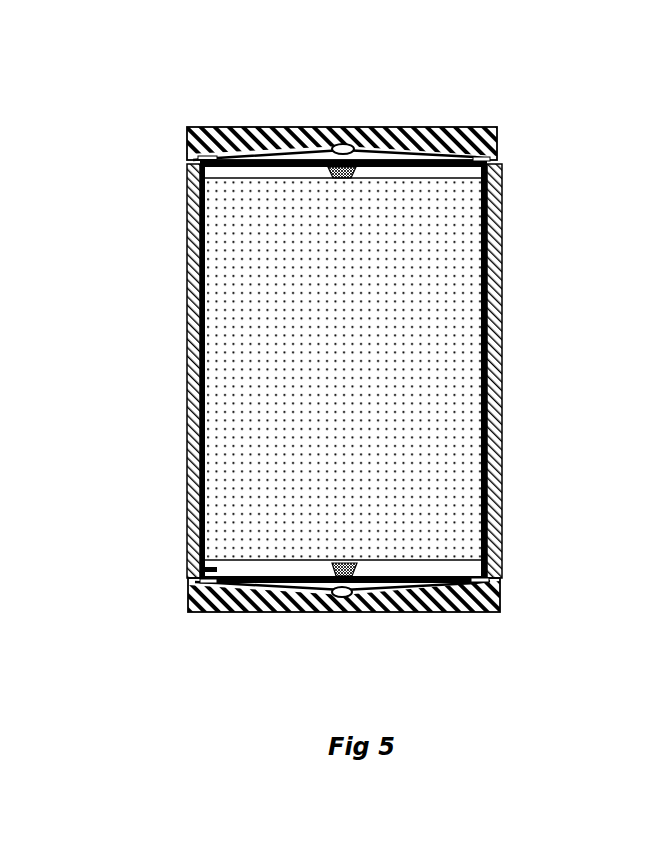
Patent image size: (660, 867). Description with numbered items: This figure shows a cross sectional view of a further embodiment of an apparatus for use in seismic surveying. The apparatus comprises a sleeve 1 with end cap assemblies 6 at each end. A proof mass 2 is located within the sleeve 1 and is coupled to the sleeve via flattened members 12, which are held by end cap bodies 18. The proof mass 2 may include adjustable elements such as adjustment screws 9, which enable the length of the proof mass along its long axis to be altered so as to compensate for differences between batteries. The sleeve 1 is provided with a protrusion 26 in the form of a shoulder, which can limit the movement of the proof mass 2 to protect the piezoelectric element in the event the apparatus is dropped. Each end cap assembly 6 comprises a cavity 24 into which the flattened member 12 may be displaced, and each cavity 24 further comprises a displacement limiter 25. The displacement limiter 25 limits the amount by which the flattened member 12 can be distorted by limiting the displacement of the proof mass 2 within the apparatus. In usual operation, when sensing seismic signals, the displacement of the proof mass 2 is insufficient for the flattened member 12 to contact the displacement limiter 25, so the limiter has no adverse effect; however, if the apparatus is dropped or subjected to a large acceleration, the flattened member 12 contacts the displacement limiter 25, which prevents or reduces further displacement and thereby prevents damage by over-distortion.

The sleeve 1 is at (503, 269).
The proof mass 2 is at (463, 488).
The end cap assembly 6 is at (148, 143).
The adjustment screw 9 is at (362, 183).
The flattened member 12 is at (464, 170).
The end cap body 18 is at (498, 143).
The cavity 24 is at (315, 145).
The displacement limiter 25 is at (352, 145).
The protrusion 26 is at (203, 569).